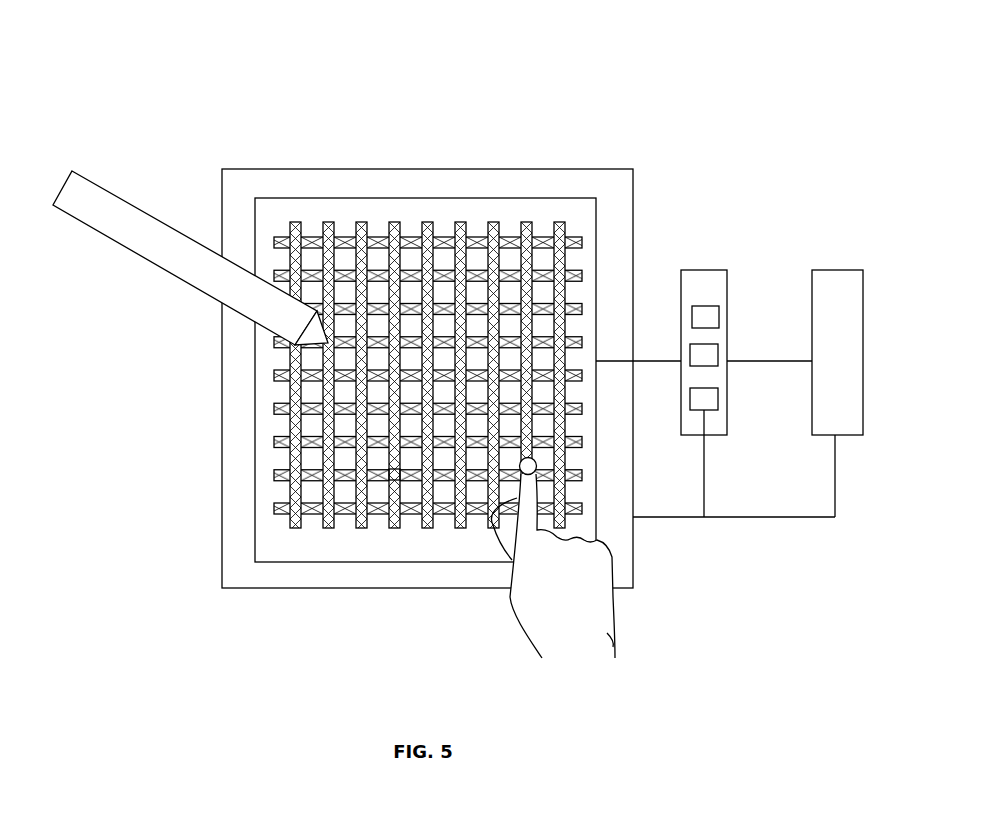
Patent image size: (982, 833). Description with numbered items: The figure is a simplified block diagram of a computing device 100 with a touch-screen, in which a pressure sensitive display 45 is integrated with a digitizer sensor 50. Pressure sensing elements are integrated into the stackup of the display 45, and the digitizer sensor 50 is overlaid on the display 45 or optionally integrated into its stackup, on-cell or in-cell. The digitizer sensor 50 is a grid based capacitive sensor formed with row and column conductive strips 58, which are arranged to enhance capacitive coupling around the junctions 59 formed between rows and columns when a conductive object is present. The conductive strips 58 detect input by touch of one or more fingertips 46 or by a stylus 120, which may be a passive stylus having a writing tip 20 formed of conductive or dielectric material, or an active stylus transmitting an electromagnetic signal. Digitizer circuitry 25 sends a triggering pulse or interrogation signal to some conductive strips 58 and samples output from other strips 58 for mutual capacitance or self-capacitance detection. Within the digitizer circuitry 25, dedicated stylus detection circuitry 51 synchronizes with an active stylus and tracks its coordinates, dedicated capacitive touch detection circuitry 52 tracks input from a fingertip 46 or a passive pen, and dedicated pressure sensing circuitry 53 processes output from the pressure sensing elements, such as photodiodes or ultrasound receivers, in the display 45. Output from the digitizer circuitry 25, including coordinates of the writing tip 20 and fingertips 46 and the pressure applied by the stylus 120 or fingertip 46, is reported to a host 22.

The computing device 100 is at (421, 71).
The pressure sensitive display 45 is at (553, 169).
The digitizer sensor 50 is at (598, 248).
The conductive strips 58 is at (495, 222).
The junctions 59 is at (392, 474).
The stylus 120 is at (190, 232).
The writing tip 20 is at (316, 330).
The fingertip 46 is at (518, 472).
The digitizer circuitry 25 is at (703, 270).
The stylus detection circuitry 51 is at (719, 318).
The capacitive touch detection circuitry 52 is at (719, 355).
The pressure sensing circuitry 53 is at (719, 399).
The host 22 is at (835, 270).